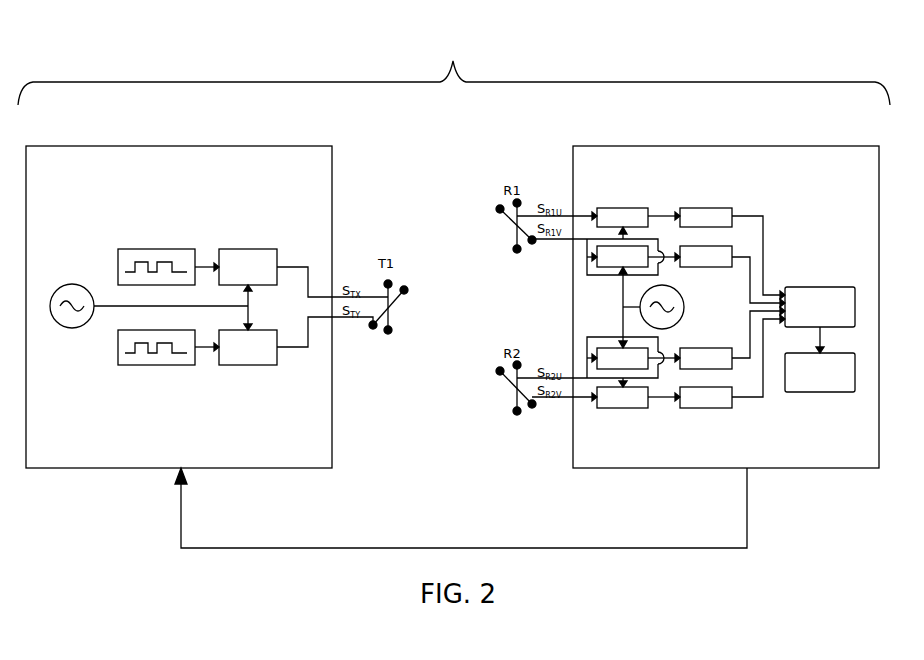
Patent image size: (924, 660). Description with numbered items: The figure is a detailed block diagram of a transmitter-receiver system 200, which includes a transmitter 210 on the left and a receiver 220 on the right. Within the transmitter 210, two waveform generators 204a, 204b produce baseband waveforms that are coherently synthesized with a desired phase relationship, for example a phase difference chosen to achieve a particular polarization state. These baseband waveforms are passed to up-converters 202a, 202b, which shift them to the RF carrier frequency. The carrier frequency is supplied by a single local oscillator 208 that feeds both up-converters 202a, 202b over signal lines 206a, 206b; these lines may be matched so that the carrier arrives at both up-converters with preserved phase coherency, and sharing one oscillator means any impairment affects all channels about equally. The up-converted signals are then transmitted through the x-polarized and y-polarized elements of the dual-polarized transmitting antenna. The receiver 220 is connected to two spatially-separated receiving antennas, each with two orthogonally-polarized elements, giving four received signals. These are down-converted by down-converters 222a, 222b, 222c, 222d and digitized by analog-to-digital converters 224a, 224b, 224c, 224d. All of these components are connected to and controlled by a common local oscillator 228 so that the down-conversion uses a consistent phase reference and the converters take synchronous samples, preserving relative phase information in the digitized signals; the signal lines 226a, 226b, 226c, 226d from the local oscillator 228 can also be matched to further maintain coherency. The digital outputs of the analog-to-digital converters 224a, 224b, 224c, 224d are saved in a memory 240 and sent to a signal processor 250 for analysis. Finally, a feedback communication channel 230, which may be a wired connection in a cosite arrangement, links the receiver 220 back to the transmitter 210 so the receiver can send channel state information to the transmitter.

The transmitter-receiver system 200 is at (454, 73).
The up-converter 202a is at (243, 248).
The up-converter 202b is at (265, 365).
The waveform generator 204a is at (157, 248).
The waveform generator 204b is at (147, 365).
The signal line 206a is at (246, 289).
The signal line 206b is at (246, 329).
The local oscillator 208 is at (73, 283).
The transmitter 210 is at (179, 307).
The receiver 220 is at (726, 307).
The down-converter 222a is at (612, 207).
The down-converter 222b is at (625, 229).
The down-converter 222c is at (623, 380).
The down-converter 222d is at (617, 409).
The analog-to-digital converter 224a is at (698, 207).
The analog-to-digital converter 224b is at (716, 247).
The analog-to-digital converter 224c is at (698, 347).
The analog-to-digital converter 224d is at (700, 409).
The signal line 226a is at (659, 251).
The signal line 226b is at (622, 270).
The signal line 226c is at (622, 342).
The signal line 226d is at (662, 362).
The local oscillator 228 is at (684, 300).
The feedback communication channel 230 is at (479, 510).
The memory 240 is at (828, 286).
The signal processor 250 is at (827, 393).